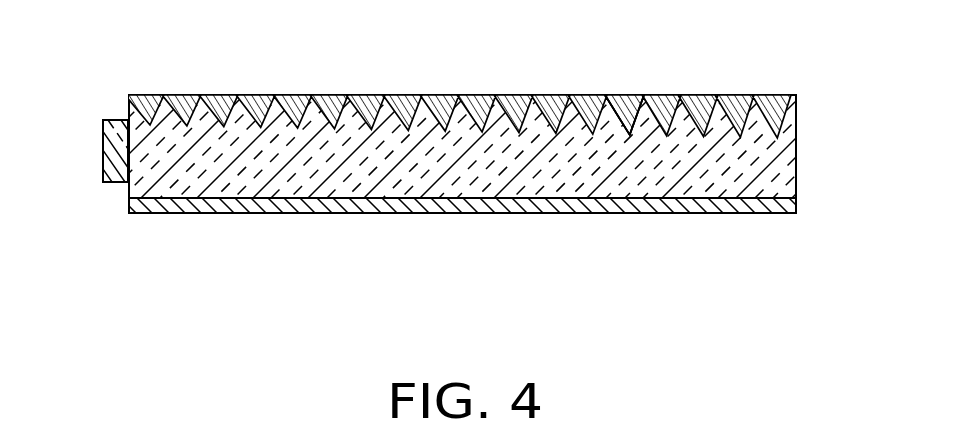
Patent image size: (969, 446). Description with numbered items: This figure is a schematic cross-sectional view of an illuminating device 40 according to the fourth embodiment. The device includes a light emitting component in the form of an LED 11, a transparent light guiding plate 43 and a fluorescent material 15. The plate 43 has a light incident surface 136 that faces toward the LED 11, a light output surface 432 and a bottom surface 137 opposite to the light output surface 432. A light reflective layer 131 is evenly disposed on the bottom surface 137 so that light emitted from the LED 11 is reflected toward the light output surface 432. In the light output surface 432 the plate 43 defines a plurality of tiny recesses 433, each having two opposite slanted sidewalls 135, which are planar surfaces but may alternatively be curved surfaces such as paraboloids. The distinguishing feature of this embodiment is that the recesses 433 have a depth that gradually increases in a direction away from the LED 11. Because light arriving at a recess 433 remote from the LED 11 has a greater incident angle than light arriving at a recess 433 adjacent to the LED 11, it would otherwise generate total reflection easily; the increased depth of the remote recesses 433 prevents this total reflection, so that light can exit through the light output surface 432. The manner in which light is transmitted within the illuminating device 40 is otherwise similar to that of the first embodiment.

The illuminating device 40 is at (462, 135).
The plate 43 is at (778, 150).
The light output surface 432 is at (761, 94).
The recesses 433 is at (621, 96).
The fluorescent material 15 is at (631, 96).
The slanted sidewall 135 is at (641, 96).
The light reflective layer 131 is at (787, 200).
The bottom surface 137 is at (345, 203).
The light incident surface 136 is at (127, 186).
The LED 11 is at (110, 146).